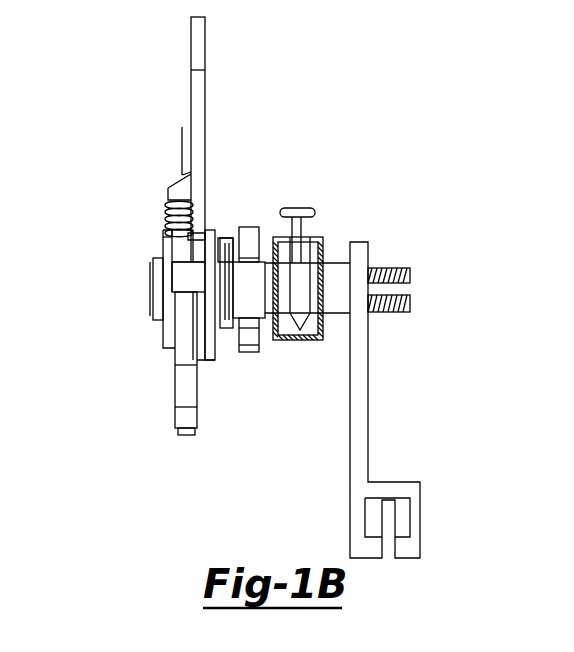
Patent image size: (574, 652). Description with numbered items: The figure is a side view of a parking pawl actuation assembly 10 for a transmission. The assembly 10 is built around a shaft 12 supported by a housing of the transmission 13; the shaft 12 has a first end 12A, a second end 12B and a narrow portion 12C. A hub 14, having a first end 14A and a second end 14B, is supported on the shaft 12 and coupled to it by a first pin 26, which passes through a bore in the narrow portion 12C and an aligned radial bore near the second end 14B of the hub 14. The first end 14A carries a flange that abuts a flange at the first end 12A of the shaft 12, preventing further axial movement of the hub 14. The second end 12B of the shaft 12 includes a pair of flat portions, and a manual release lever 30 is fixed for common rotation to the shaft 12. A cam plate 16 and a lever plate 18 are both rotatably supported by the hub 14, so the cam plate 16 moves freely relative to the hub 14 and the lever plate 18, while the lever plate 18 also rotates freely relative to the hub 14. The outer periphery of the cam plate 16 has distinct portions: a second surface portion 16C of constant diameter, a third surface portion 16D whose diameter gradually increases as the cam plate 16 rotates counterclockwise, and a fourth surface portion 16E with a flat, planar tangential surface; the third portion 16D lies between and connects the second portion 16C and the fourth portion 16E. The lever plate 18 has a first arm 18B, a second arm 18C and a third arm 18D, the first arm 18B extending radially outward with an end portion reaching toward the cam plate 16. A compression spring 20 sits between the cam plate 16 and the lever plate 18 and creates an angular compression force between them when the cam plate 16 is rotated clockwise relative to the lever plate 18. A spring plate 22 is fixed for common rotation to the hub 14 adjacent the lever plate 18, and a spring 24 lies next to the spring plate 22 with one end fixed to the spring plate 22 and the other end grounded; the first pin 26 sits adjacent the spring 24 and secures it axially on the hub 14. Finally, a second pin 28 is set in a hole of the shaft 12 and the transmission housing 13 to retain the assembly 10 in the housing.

The parking pawl actuation assembly 10 is at (95, 105).
The shaft 12 is at (153, 270).
The first end of shaft 12A is at (153, 308).
The second end of shaft 12B is at (410, 287).
The narrow portion of shaft 12C is at (298, 268).
The transmission housing 13 is at (312, 342).
The hub 14 is at (163, 345).
The first end of hub 14A is at (163, 242).
The second end of hub 14B is at (262, 240).
The cam plate 16 is at (197, 393).
The second surface portion of cam plate 16C is at (175, 385).
The third surface portion of cam plate 16D is at (175, 422).
The fourth surface portion of cam plate 16E is at (190, 436).
The lever plate 18 is at (205, 103).
The first arm of lever plate 18B is at (183, 258).
The second arm of lever plate 18C is at (205, 38).
The third arm of lever plate 18D is at (183, 127).
The compression spring 20 is at (165, 200).
The spring plate 22 is at (207, 230).
The spring 24 is at (225, 243).
The first pin 26 is at (255, 355).
The second pin 28 is at (306, 208).
The manual release lever 30 is at (368, 418).